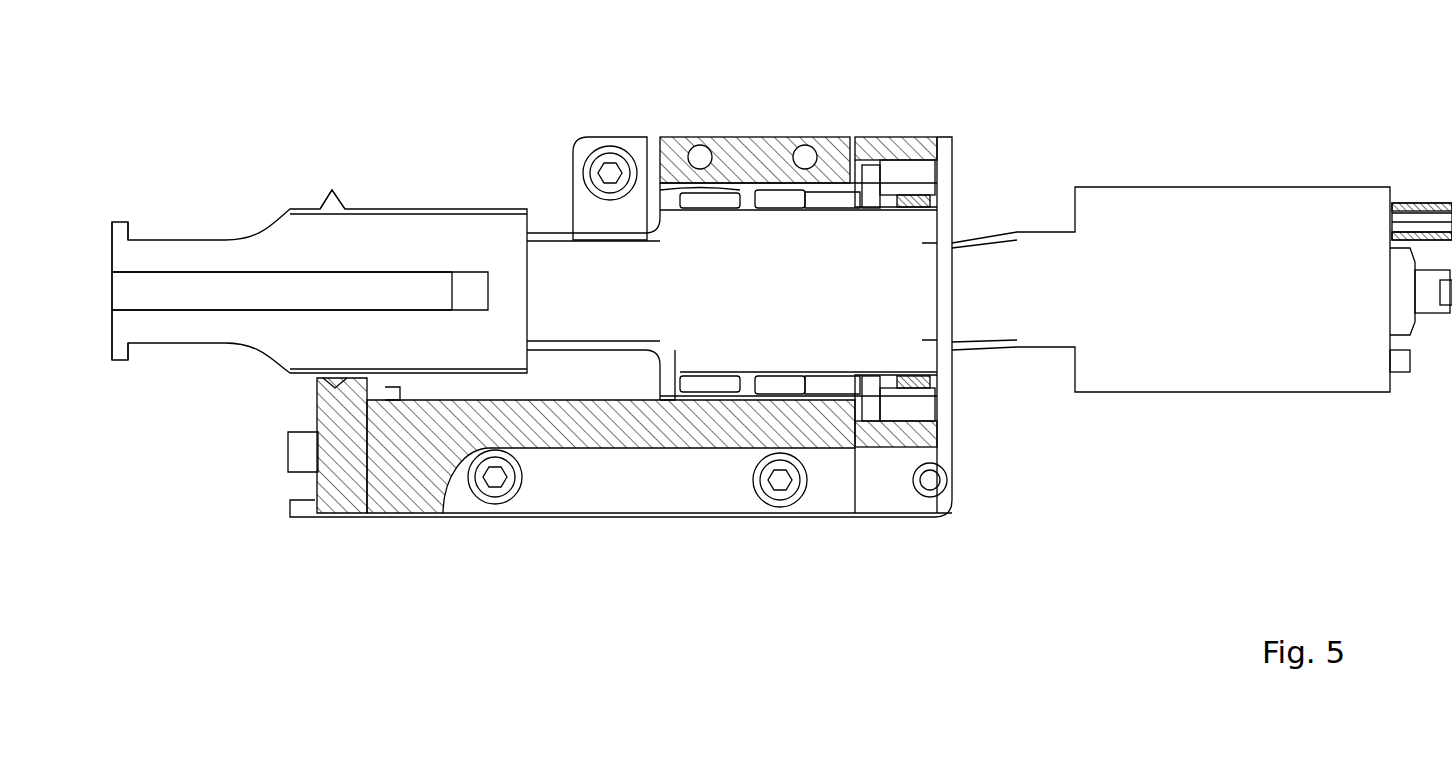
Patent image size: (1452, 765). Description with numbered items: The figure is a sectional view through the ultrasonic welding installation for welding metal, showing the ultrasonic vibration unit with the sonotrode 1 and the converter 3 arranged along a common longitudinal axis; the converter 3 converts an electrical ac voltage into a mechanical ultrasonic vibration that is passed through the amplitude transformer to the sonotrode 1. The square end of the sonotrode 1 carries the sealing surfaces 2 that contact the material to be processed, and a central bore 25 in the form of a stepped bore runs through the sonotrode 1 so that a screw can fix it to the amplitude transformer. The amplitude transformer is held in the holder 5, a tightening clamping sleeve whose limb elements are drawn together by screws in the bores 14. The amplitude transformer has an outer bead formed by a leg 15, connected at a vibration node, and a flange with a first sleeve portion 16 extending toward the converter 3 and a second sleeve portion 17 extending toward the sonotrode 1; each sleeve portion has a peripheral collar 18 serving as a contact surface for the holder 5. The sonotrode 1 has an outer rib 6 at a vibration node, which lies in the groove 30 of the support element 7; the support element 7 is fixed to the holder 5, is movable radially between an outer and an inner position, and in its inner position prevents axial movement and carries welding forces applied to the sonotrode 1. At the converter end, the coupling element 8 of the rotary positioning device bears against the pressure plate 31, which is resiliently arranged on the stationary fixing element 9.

The sonotrode 1 is at (455, 212).
The sealing surface 2 is at (120, 222).
The converter 3 is at (1200, 240).
The holder 5 is at (672, 137).
The outer rib 6 is at (338, 200).
The support element 7 is at (347, 493).
The coupling element 8 is at (870, 150).
The fixing element 9 is at (962, 150).
The bores 14 is at (805, 150).
The leg 15 is at (790, 398).
The first sleeve portion 16 is at (795, 400).
The second sleeve portion 17 is at (710, 400).
The peripheral collar 18 is at (688, 398).
The central bore 25 is at (137, 290).
The groove 30 is at (335, 388).
The pressure plate 31 is at (910, 150).